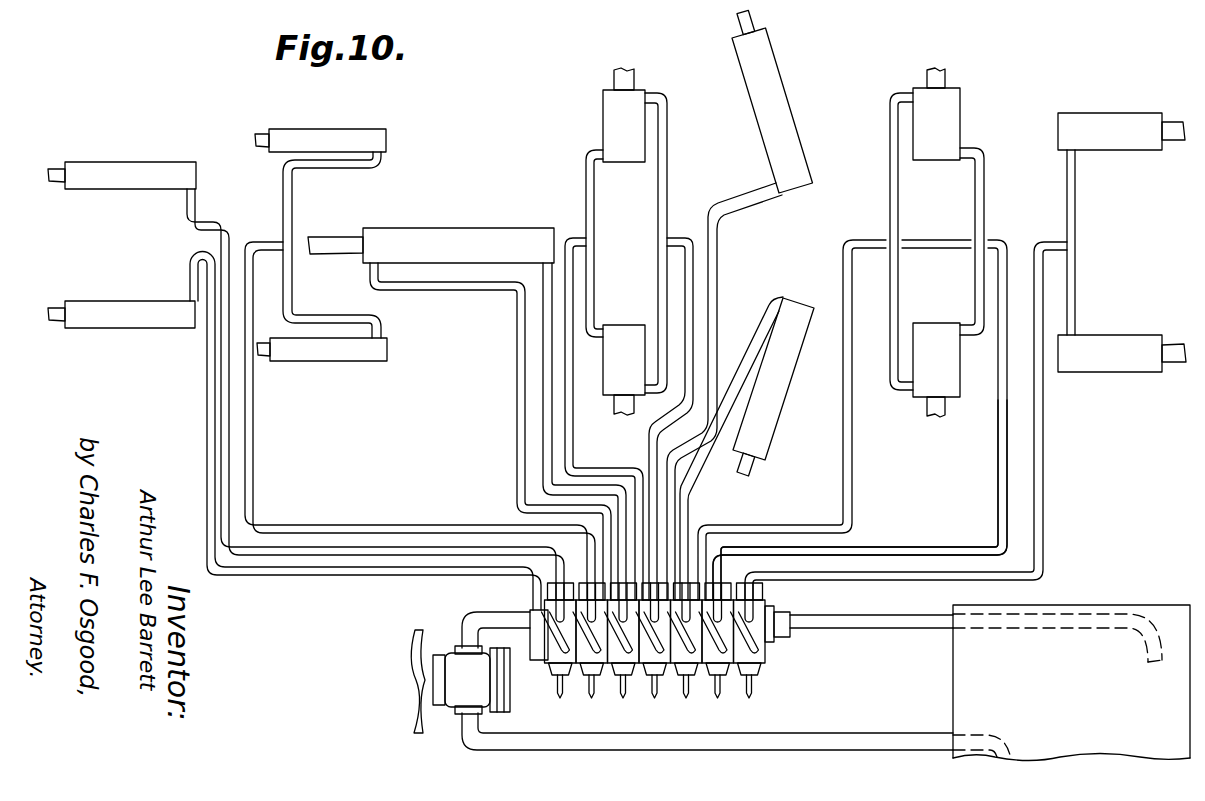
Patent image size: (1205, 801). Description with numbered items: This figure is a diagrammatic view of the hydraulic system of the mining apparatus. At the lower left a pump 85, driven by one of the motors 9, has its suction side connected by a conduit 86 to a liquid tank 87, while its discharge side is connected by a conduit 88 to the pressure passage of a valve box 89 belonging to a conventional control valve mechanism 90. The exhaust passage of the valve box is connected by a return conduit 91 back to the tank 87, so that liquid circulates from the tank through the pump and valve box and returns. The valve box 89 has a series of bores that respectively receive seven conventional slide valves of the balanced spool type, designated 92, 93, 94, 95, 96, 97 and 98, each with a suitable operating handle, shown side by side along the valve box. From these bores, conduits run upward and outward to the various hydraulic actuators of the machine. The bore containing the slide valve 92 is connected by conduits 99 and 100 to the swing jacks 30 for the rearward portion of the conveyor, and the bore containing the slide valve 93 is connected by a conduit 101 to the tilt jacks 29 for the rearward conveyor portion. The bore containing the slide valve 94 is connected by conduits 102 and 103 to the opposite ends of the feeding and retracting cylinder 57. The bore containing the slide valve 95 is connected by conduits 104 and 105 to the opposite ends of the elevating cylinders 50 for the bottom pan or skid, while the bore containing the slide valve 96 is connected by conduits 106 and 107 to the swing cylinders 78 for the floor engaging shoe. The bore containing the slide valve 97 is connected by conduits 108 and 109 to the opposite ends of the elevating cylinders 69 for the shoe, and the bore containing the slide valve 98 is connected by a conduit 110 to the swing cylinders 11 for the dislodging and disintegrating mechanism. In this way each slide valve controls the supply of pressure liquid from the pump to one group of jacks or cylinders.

The motor 9 is at (410, 673).
The swing cylinders 11 is at (1135, 118).
The tilt jacks 29 is at (350, 128).
The swing jacks 30 is at (121, 165).
The elevating cylinders 50 is at (603, 100).
The feeding and retracting cylinder 57 is at (503, 228).
The elevating cylinders 69 is at (957, 118).
The swing cylinders 78 is at (797, 118).
The pump 85 is at (465, 690).
The conduit 86 is at (795, 740).
The liquid tank 87 is at (1088, 606).
The conduit 88 is at (470, 618).
The valve box 89 is at (790, 652).
The control valve mechanism 90 is at (547, 657).
The return conduit 91 is at (878, 615).
The slide valve 92 is at (560, 698).
The slide valve 93 is at (592, 698).
The slide valve 94 is at (623, 698).
The slide valve 95 is at (654, 698).
The slide valve 96 is at (686, 698).
The slide valve 97 is at (718, 698).
The slide valve 98 is at (749, 698).
The conduit 99 is at (327, 577).
The conduit 100 is at (381, 560).
The conduit 101 is at (345, 528).
The conduit 102 is at (516, 355).
The conduit 103 is at (543, 372).
The conduit 104 is at (585, 476).
The conduit 105 is at (657, 440).
The conduit 106 is at (677, 470).
The conduit 107 is at (716, 494).
The conduit 108 is at (783, 528).
The conduit 109 is at (905, 550).
The conduit 110 is at (1043, 490).